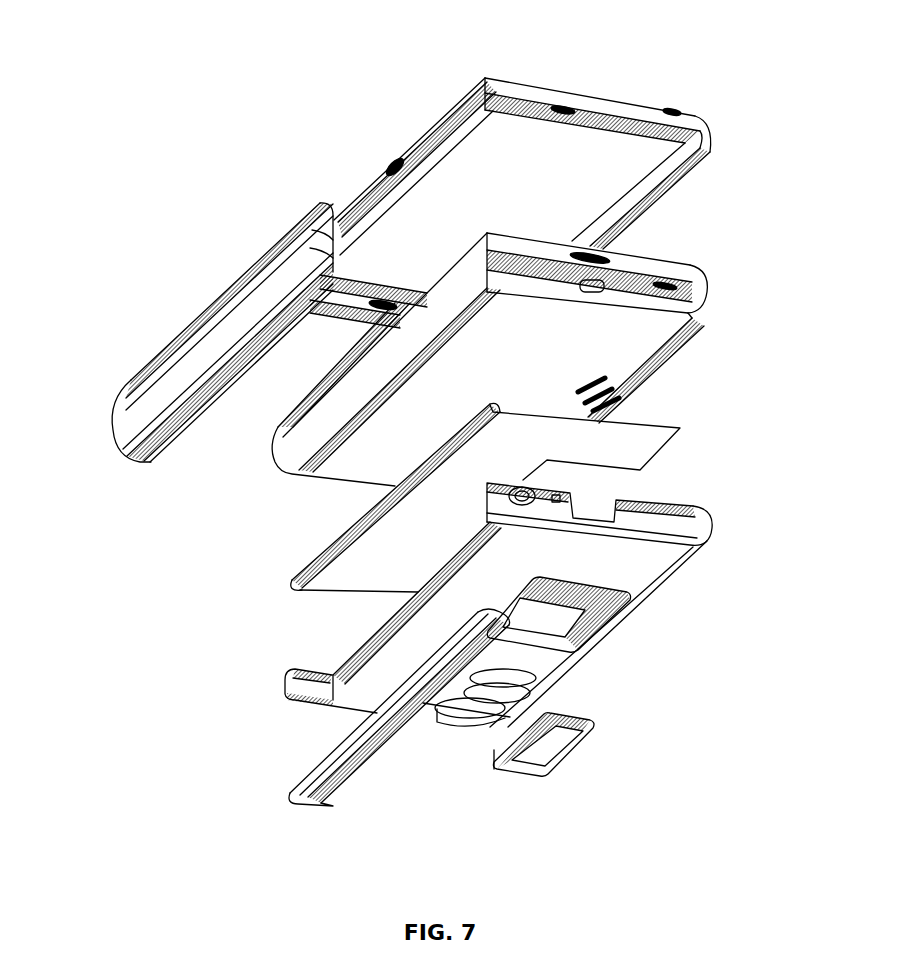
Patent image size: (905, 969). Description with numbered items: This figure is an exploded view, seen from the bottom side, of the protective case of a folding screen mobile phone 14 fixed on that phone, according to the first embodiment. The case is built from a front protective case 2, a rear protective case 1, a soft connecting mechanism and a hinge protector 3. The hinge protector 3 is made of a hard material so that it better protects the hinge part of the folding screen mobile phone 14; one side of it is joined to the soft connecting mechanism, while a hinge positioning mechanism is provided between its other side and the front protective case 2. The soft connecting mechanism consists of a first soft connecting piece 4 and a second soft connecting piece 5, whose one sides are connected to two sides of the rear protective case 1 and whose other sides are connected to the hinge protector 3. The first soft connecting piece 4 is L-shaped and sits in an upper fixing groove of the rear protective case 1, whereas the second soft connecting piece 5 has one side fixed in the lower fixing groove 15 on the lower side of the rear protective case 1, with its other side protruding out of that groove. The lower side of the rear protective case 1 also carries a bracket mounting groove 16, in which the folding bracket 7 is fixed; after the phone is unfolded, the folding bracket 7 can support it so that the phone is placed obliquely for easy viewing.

The rear protective case 1 is at (680, 519).
The front protective case 2 is at (581, 131).
The hinge protector 3 is at (226, 323).
The first soft connecting piece 4 is at (430, 510).
The second soft connecting piece 5 is at (378, 733).
The folding bracket 7 is at (553, 742).
The folding screen mobile phone 14 is at (587, 343).
The lower fixing groove 15 is at (400, 615).
The bracket mounting groove 16 is at (553, 606).